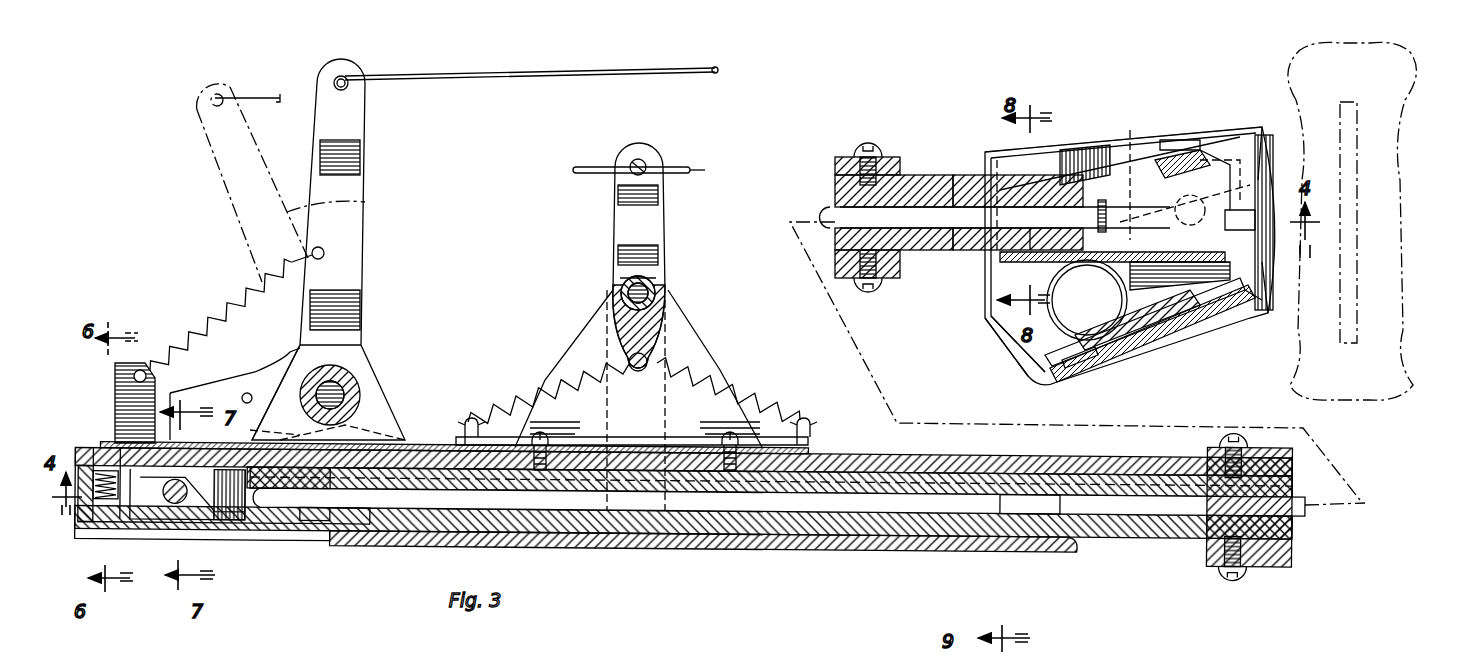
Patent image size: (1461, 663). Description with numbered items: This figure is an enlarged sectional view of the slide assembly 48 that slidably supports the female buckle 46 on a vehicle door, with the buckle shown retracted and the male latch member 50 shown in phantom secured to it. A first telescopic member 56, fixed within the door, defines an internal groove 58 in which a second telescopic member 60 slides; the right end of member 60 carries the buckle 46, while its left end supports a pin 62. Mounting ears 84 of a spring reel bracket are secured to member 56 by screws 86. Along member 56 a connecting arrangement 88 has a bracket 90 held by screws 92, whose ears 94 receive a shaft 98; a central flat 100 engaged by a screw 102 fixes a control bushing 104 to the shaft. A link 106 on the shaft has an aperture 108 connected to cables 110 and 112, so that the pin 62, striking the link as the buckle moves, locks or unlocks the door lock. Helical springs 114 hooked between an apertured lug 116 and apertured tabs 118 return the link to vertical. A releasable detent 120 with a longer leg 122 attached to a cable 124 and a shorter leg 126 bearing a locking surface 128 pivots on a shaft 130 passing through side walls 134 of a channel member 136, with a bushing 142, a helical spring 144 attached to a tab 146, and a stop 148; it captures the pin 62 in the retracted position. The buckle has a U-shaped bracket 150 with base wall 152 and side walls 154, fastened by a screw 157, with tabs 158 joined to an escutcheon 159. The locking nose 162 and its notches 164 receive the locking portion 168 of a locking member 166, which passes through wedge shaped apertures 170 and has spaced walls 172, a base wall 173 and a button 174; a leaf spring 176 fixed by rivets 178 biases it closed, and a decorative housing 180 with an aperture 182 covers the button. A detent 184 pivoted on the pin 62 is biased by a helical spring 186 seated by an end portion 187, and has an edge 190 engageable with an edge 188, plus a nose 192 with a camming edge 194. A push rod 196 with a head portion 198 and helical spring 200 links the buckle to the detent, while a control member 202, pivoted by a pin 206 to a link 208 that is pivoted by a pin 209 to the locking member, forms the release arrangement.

The female buckle 46 is at (1158, 128).
The slide assembly 48 is at (925, 545).
The male latch member 50 is at (1422, 72).
The first telescopic member 56 is at (810, 530).
The internal groove 58 is at (1030, 545).
The second telescopic member 60 is at (720, 545).
The pin 62 is at (205, 520).
The mounting ears 84 is at (897, 157).
The screws 86 is at (866, 145).
The connecting arrangement 88 is at (605, 250).
The bracket 90 is at (740, 352).
The screws 92 is at (550, 440).
The ears 94 is at (578, 356).
The shaft 98 is at (663, 300).
The central flat 100 is at (650, 288).
The screw 102 is at (622, 284).
The control bushing 104 is at (622, 294).
The link 106 is at (662, 220).
The aperture 108 is at (646, 162).
The cable 110 is at (583, 166).
The cable 112 is at (692, 168).
The helical springs 114 is at (745, 396).
The apertured lug 116 is at (650, 342).
The apertured tabs 118 is at (486, 431).
The releasable detent 120 is at (368, 303).
The longer leg 122 is at (352, 216).
The cable 124 is at (283, 92).
The shorter leg 126 is at (250, 388).
The locking surface 128 is at (118, 377).
The shaft 130 is at (362, 395).
The side walls 134 is at (365, 416).
The channel member 136 is at (445, 442).
The bushing 142 is at (362, 370).
The helical spring 144 is at (248, 300).
The tab 146 is at (148, 365).
The stop 148 is at (370, 431).
The U-shaped bracket 150 is at (1075, 152).
The base wall 152 is at (1170, 325).
The side walls 154 is at (1185, 150).
The screw 157 is at (1000, 255).
The tabs 158 is at (1262, 127).
The escutcheon 159 is at (1272, 298).
The locking nose 162 is at (1130, 135).
The notches 164 is at (1097, 215).
The locking member 166 is at (1248, 290).
The locking portion 168 is at (1200, 160).
The wedge shaped apertures 170 is at (1205, 140).
The spaced walls 172 is at (1225, 305).
The base wall 173 is at (1165, 345).
The button 174 is at (1118, 370).
The leaf spring 176 is at (1060, 297).
The rivets 178 is at (1085, 278).
The decorative housing 180 is at (1030, 372).
The aperture 182 is at (1070, 385).
The detent 184 is at (120, 520).
The helical spring 186 is at (130, 449).
The end portion 187 is at (105, 449).
The edge 188 is at (1080, 545).
The edge 190 is at (182, 530).
The nose 192 is at (275, 530).
The camming edge 194 is at (305, 525).
The push rod 196 is at (580, 500).
The head portion 198 is at (1162, 195).
The helical spring 200 is at (1060, 185).
The control member 202 is at (360, 540).
The pin 206 is at (1140, 170).
The link 208 is at (1175, 178).
The pin 209 is at (1250, 202).